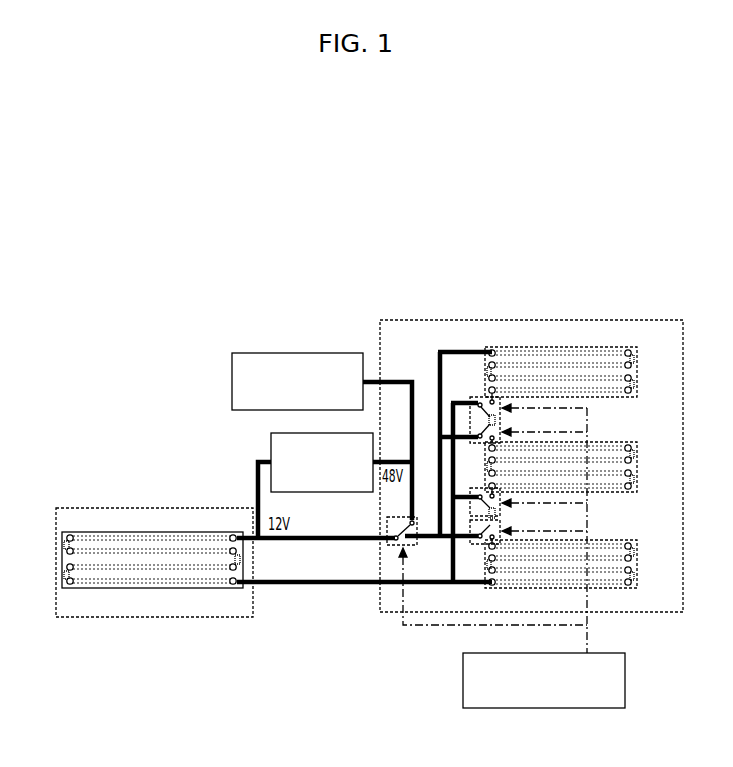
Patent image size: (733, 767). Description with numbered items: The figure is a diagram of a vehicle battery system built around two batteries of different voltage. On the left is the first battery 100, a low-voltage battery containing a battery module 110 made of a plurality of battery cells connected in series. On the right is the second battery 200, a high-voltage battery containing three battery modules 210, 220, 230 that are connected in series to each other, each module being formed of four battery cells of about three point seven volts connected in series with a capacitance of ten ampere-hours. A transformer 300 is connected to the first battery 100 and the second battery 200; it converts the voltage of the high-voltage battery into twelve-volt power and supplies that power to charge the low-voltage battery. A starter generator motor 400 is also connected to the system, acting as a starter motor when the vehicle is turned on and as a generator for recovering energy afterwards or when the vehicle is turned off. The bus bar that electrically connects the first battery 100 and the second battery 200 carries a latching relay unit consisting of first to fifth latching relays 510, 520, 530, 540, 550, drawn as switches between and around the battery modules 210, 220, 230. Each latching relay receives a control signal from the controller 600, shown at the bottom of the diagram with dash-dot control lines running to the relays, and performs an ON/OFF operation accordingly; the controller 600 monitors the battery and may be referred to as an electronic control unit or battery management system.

The first battery 100 is at (98, 507).
The battery module 110 is at (62, 557).
The second battery 200 is at (644, 320).
The battery module 210 is at (637, 372).
The battery module 220 is at (637, 467).
The battery module 230 is at (637, 565).
The transformer 300 is at (334, 433).
The starter generator motor 400 is at (322, 353).
The first latching relay 510 is at (417, 545).
The second latching relay 520 is at (482, 397).
The third latching relay 530 is at (476, 443).
The fourth latching relay 540 is at (478, 488).
The fifth latching relay 550 is at (478, 545).
The controller 600 is at (503, 653).